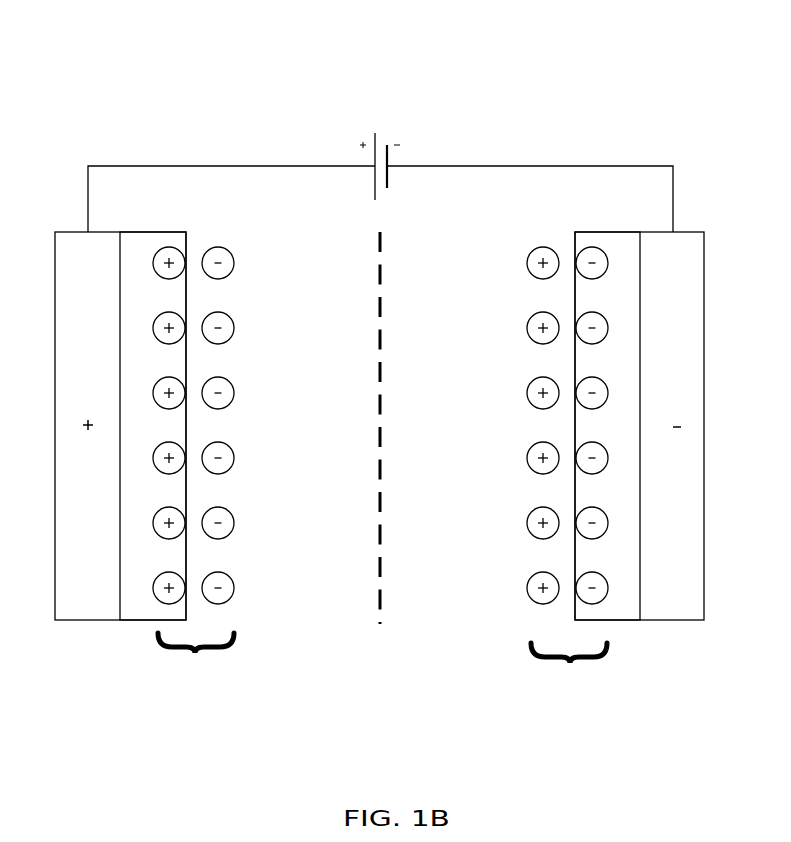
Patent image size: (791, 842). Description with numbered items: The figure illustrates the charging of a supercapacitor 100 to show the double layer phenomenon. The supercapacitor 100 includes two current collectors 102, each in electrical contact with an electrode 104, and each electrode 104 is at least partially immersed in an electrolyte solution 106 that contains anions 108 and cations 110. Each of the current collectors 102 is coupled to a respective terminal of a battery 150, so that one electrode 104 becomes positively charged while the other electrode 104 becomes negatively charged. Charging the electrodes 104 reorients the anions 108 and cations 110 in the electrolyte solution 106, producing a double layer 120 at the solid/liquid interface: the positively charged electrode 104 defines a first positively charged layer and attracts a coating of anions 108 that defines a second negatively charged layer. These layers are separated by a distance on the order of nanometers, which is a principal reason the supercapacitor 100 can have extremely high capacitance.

The supercapacitor 100 is at (120, 102).
The current collector 102 is at (87, 622).
The electrode 104 is at (152, 622).
The electrolyte solution 106 is at (315, 588).
The anions 108 is at (207, 250).
The cations 110 is at (542, 247).
The double layer 120 is at (193, 665).
The battery 150 is at (413, 102).